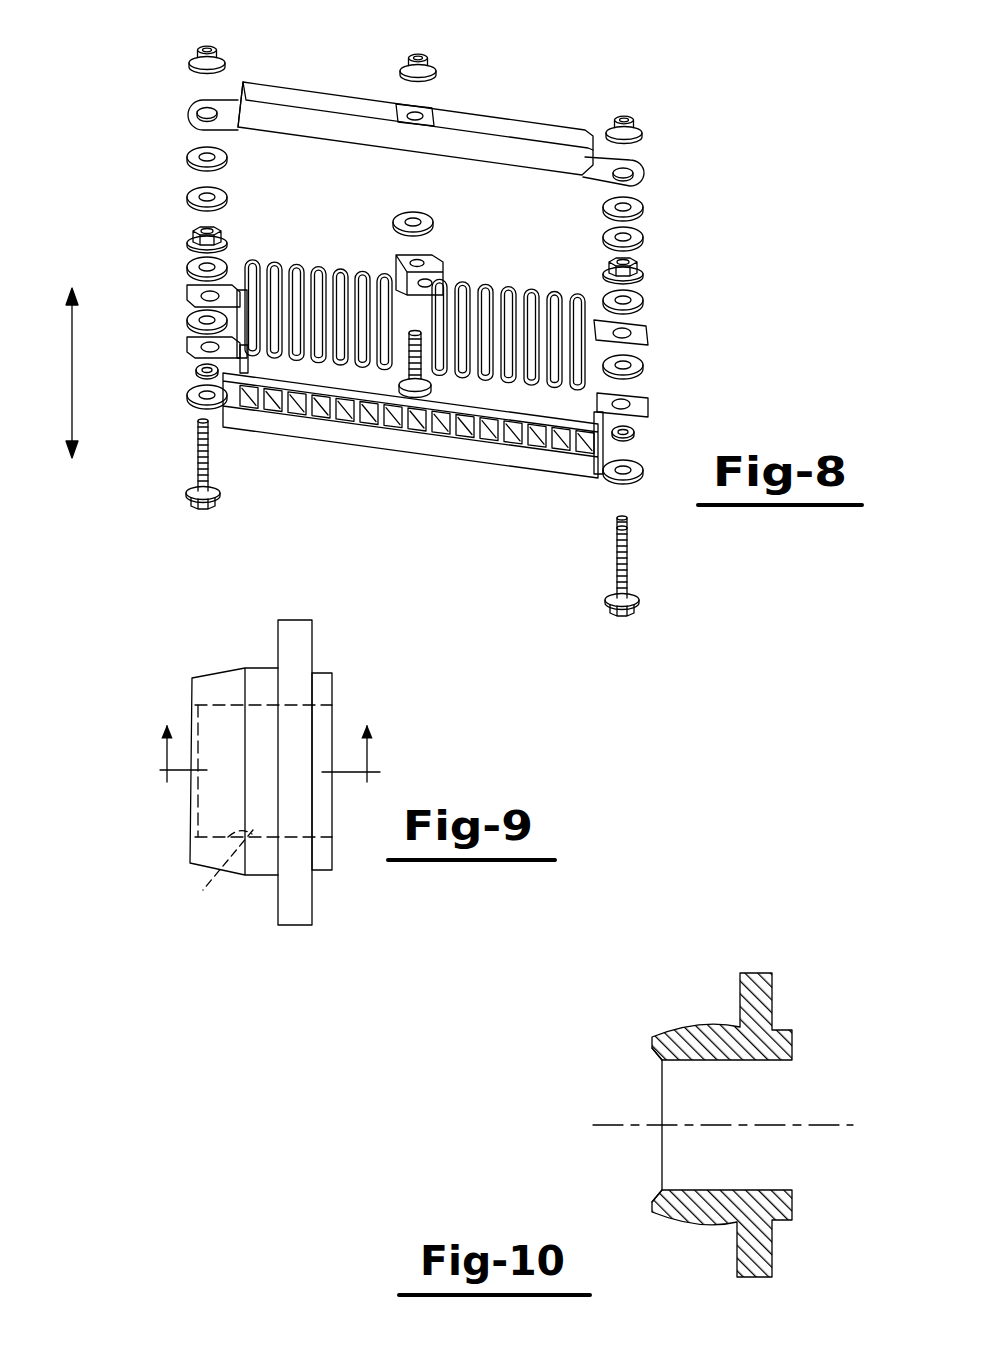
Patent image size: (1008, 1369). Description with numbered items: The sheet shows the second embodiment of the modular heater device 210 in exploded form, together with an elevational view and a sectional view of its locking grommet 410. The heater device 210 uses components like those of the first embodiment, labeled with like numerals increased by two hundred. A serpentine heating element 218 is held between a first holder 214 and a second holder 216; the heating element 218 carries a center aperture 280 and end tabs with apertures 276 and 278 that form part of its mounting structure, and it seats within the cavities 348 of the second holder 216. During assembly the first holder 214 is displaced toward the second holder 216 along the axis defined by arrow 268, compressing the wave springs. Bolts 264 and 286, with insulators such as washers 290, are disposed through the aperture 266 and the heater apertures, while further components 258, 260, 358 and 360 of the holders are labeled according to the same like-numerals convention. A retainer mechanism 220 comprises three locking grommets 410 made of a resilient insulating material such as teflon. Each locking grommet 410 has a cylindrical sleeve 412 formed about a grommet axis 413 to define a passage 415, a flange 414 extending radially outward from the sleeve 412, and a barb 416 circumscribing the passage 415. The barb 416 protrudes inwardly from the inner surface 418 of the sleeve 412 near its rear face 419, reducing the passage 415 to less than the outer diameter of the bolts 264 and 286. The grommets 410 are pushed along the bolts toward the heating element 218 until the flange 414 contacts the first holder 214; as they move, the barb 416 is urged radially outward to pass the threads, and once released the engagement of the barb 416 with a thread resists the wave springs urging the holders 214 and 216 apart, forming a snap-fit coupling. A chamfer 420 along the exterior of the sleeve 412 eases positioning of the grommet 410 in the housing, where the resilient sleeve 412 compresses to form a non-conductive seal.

In FIG. 8, the modular heater device 210 is at (163, 88).
In FIG. 8, the first holder 214 is at (429, 108).
In FIG. 8, the second holder 216 is at (410, 461).
In FIG. 8, the heating element 218 is at (268, 262).
In FIG. 8, the retainer mechanism 220 is at (651, 126).
In FIG. 8, the right end tab 258 is at (645, 172).
In FIG. 8, the left end tab 260 is at (190, 116).
In FIG. 8, the bolt 264 is at (432, 388).
In FIG. 8, the aperture 266 is at (418, 114).
In FIG. 8, the arrow 268 is at (102, 396).
In FIG. 8, the aperture 276 is at (650, 333).
In FIG. 8, the aperture 278 is at (188, 294).
In FIG. 8, the center aperture 280 is at (450, 264).
In FIG. 8, the bolt 286 is at (206, 512).
In FIG. 8, the washer 290 is at (187, 199).
In FIG. 8, the cavities 348 is at (333, 415).
In FIG. 8, the right lower tab 358 is at (648, 405).
In FIG. 8, the left lower tab 360 is at (190, 352).
In FIG. 8, the locking grommet 410 is at (226, 53).
In FIG. 9, the locking grommet 410 is at (236, 770).
In FIG. 10, the locking grommet 410 is at (714, 1131).
In FIG. 9, the cylindrical sleeve 412 is at (264, 665).
In FIG. 10, the cylindrical sleeve 412 is at (720, 1022).
In FIG. 10, the grommet axis 413 is at (827, 1124).
In FIG. 9, the flange 414 is at (288, 927).
In FIG. 10, the flange 414 is at (752, 1280).
In FIG. 10, the passage 415 is at (746, 1110).
In FIG. 9, the barb 416 is at (196, 838).
In FIG. 10, the barb 416 is at (652, 1196).
In FIG. 9, the inner surface 418 is at (214, 880).
In FIG. 10, the inner surface 418 is at (765, 1188).
In FIG. 10, the rear face 419 is at (652, 1046).
In FIG. 9, the chamfer 420 is at (214, 672).
In FIG. 10, the chamfer 420 is at (666, 1030).